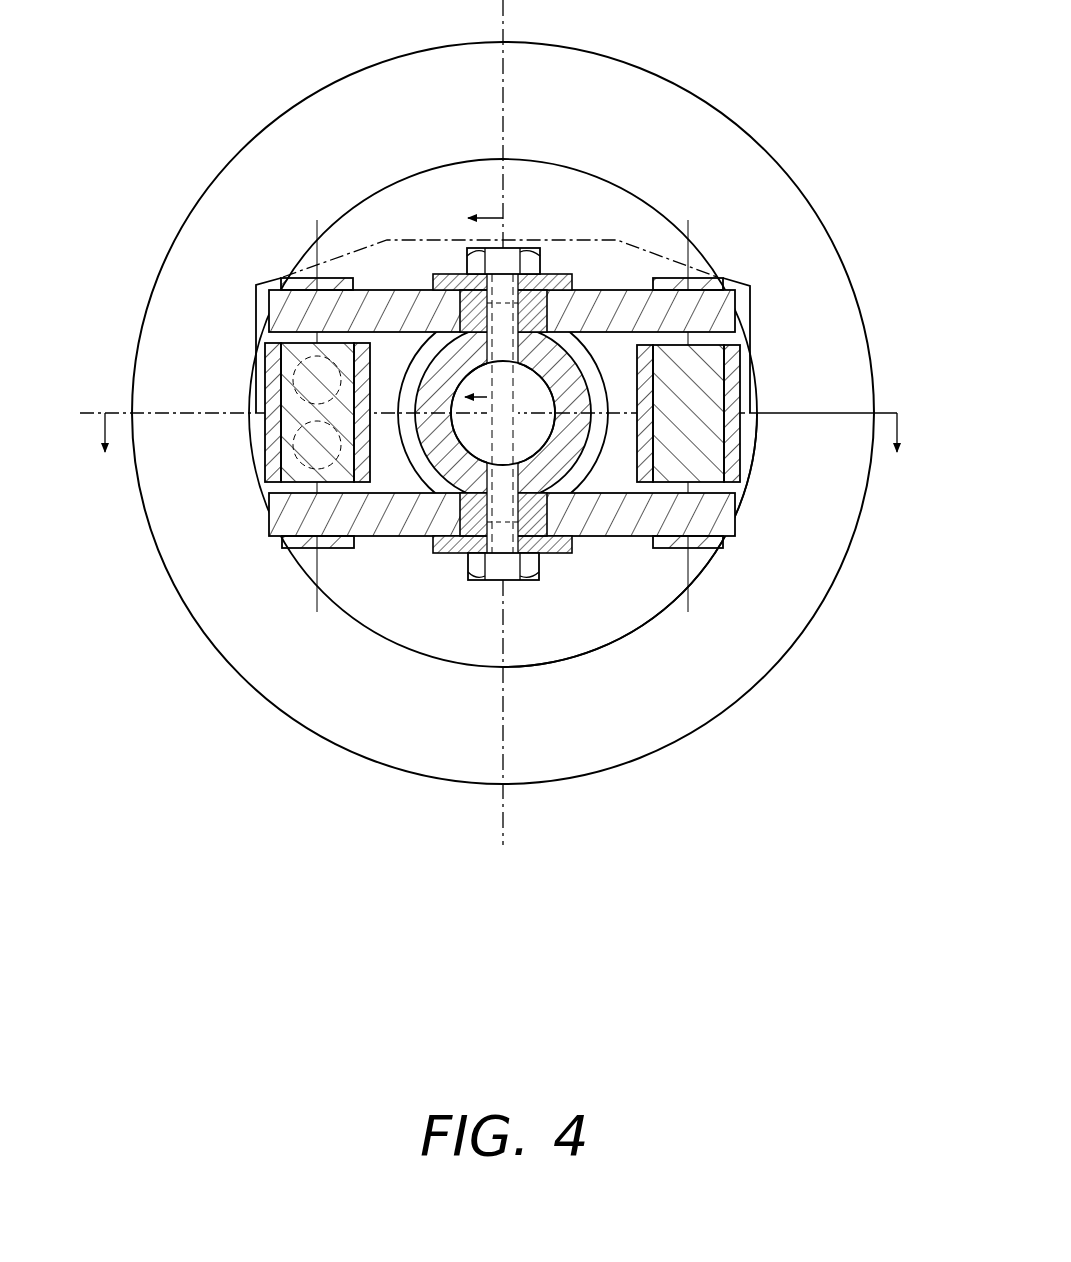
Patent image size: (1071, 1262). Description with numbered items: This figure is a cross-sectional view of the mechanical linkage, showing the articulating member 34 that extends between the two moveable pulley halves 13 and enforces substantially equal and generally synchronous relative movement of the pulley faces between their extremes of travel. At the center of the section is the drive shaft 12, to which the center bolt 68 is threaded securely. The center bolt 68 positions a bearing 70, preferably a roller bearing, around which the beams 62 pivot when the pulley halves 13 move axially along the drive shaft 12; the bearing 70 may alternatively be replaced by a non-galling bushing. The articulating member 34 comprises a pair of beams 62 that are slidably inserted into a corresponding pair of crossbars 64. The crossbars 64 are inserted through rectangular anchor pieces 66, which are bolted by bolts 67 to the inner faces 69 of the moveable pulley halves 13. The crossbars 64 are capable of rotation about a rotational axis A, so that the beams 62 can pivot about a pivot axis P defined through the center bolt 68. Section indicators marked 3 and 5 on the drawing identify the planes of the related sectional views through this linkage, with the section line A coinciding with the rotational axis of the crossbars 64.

The drive shaft 12 is at (440, 487).
The moveable pulley half 13 is at (707, 150).
The articulating member 34 is at (623, 580).
The beam 62 is at (631, 300).
The crossbar 64 is at (720, 278).
The anchor piece 66 is at (730, 381).
The bolt 67 is at (322, 372).
The center bolt 68 is at (515, 262).
The inner face 69 is at (535, 638).
The bearing 70 is at (545, 295).
The pivot axis P is at (502, 112).
The rotational axis A is at (317, 598).
The section 3- 3 is at (493, 463).
The section 5- 5 is at (463, 303).